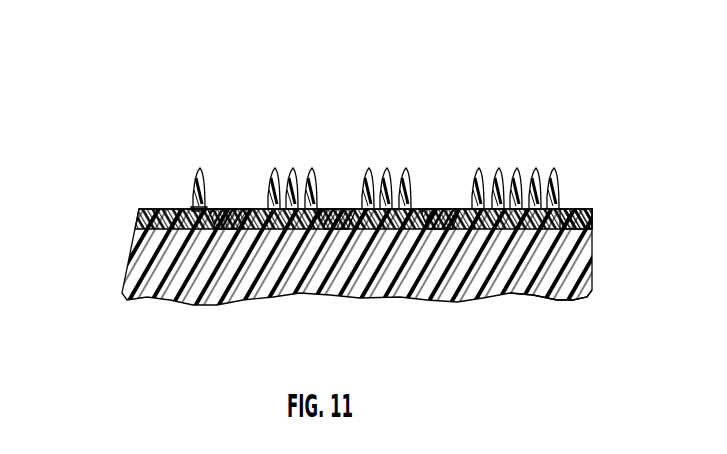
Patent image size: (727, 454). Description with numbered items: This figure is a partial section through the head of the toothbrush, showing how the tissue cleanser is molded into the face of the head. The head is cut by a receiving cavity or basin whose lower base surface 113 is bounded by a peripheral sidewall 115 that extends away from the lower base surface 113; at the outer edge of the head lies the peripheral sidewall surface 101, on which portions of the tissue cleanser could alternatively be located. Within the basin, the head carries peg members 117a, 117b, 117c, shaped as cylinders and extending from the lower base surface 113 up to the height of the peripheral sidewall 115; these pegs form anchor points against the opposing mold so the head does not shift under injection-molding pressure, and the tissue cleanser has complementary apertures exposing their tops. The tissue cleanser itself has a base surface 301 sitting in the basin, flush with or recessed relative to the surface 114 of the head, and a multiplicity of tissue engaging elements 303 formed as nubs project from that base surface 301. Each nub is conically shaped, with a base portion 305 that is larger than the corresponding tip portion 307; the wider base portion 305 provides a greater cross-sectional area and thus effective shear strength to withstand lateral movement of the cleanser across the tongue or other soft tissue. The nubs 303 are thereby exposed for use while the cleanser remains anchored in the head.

The peripheral sidewall surface 101 is at (122, 248).
The lower base surface 113 is at (532, 233).
The surface of the head 114 is at (140, 212).
The peripheral sidewall 115 is at (567, 203).
The peg member 117a is at (235, 207).
The peg member 117b is at (340, 207).
The peg member 117c is at (443, 207).
The base surface 301 is at (463, 203).
The tissue engaging elements 303 is at (273, 168).
The base portion 305 is at (192, 194).
The tip portion 307 is at (197, 165).